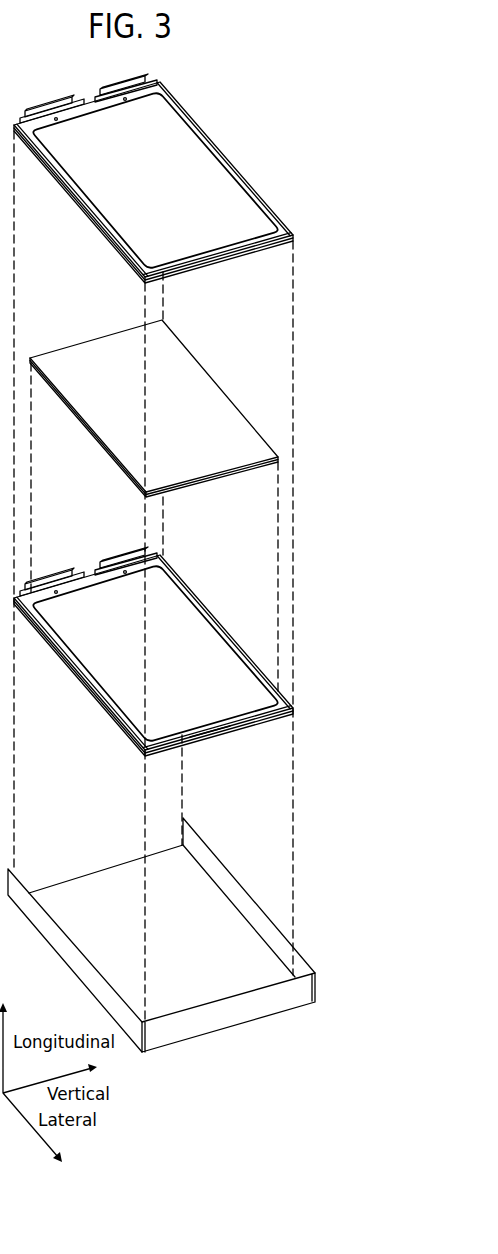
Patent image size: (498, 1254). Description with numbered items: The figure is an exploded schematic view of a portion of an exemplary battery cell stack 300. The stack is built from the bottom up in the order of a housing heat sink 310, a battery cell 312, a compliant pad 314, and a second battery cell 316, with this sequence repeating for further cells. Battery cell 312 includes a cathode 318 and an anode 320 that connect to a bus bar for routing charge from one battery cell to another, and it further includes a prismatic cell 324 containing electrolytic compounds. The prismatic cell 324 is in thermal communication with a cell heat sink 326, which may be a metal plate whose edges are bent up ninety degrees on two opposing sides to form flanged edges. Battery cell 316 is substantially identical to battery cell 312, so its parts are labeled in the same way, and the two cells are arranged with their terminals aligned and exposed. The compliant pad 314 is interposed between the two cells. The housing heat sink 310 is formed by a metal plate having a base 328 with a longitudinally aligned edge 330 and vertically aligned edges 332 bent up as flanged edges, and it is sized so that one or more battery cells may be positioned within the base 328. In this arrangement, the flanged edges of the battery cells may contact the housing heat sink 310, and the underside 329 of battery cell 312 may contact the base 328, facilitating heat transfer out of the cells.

The battery cell stack 300 is at (302, 95).
The housing heat sink 310 is at (161, 938).
The battery cell 312 is at (239, 598).
The compliant pad 314 is at (236, 368).
The battery cell 316 is at (246, 134).
The cathode 318 is at (48, 106).
The anode 320 is at (118, 92).
The prismatic cell 324 is at (168, 188).
The cell heat sink 326 is at (240, 243).
The base 328 is at (88, 883).
The underside 329 is at (208, 746).
The longitudinally aligned edge 330 is at (223, 1017).
The vertically aligned edges 332 is at (263, 913).